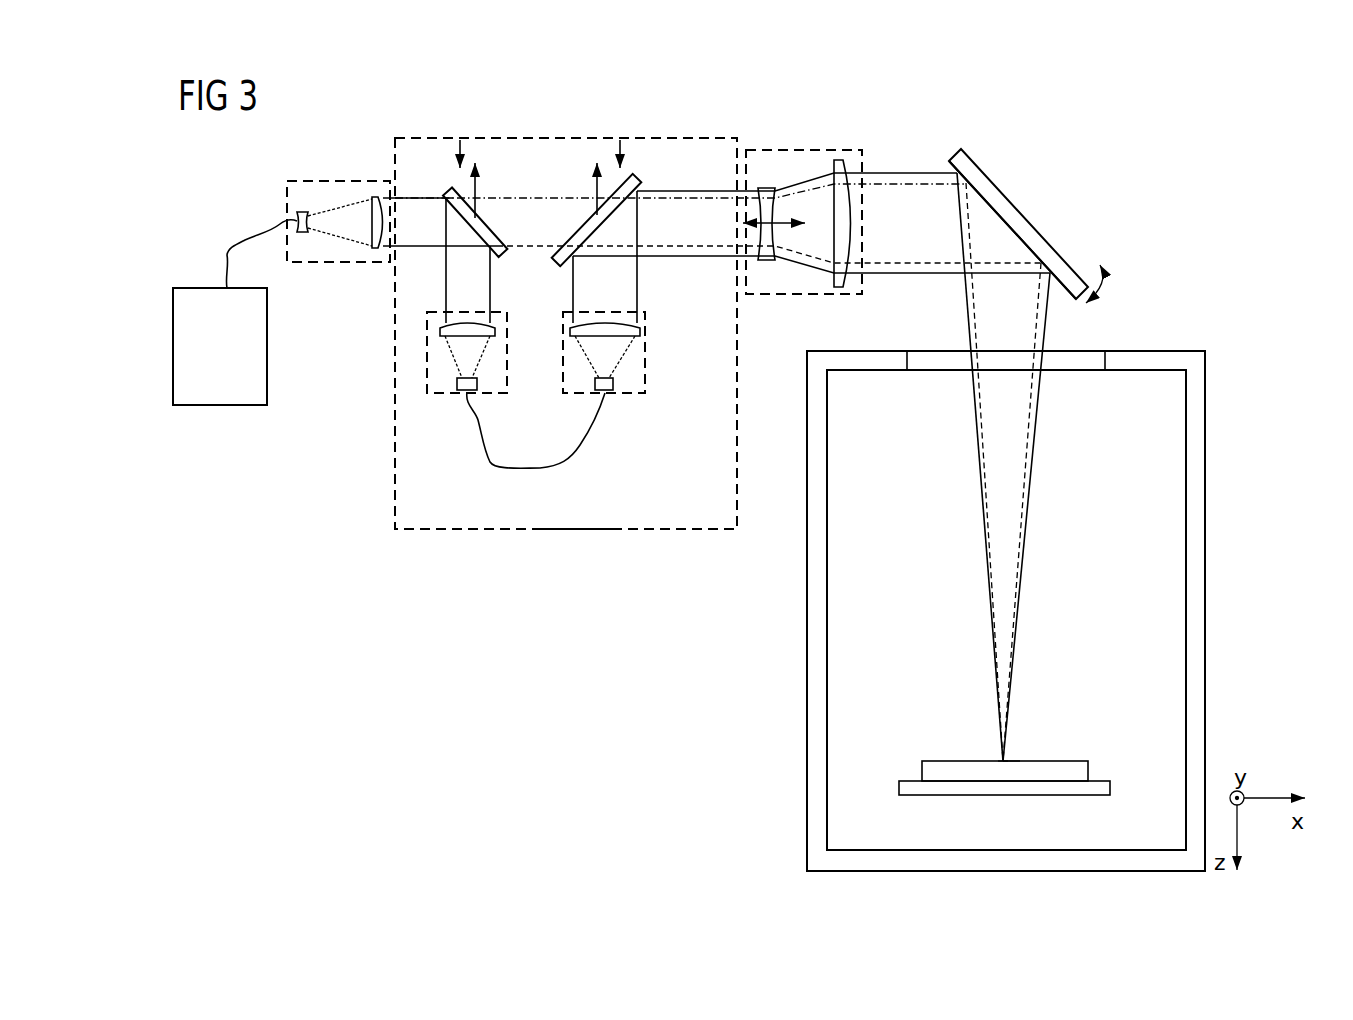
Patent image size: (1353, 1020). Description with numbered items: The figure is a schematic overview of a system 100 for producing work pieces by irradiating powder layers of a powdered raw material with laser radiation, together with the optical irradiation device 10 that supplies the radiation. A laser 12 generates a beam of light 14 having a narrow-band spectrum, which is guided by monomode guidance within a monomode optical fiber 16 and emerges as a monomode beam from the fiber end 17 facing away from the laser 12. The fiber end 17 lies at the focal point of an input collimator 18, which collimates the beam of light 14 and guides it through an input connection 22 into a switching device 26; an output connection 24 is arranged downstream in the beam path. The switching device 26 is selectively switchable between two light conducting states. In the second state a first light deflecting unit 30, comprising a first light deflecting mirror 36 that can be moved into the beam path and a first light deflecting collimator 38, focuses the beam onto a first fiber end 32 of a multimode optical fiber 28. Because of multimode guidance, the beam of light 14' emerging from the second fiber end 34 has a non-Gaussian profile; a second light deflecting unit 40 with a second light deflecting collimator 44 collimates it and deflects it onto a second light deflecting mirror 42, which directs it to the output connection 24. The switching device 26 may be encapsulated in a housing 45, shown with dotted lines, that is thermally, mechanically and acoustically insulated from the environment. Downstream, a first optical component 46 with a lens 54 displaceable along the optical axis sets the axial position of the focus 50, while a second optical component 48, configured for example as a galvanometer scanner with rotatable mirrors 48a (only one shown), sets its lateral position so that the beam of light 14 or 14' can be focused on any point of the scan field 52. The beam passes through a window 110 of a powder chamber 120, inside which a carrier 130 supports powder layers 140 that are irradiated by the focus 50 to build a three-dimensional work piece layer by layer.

The optical irradiation device 10 is at (729, 124).
The laser 12 is at (267, 346).
The beam of light 14 is at (712, 452).
The beam of light 14' is at (831, 467).
The monomode optical fiber 16 is at (222, 254).
The fiber end 17 is at (290, 218).
The input collimator 18 is at (347, 262).
The input connection 22 is at (404, 218).
The output connection 24 is at (727, 220).
The switching device 26 is at (472, 531).
The multimode optical fiber 28 is at (555, 467).
The first light deflecting unit 30 is at (460, 138).
The first fiber end 32 is at (470, 393).
The second fiber end 34 is at (605, 393).
The first light deflecting mirror 36 is at (505, 258).
The first light deflecting collimator 38 is at (450, 394).
The second light deflecting unit 40 is at (620, 138).
The second light deflecting mirror 42 is at (582, 212).
The second light deflecting collimator 44 is at (645, 362).
The housing 45 is at (575, 530).
The first optical component 46 is at (808, 150).
The second optical component 48 is at (1004, 180).
The mirror 48a is at (1035, 221).
The focus 50 is at (1000, 757).
The scan field 52 is at (1025, 758).
The lens 54 is at (780, 205).
The system 100 is at (1228, 298).
The window 110 is at (1090, 372).
The powder chamber 120 is at (901, 556).
The carrier 130 is at (1112, 788).
The powder layer 140 is at (1090, 766).